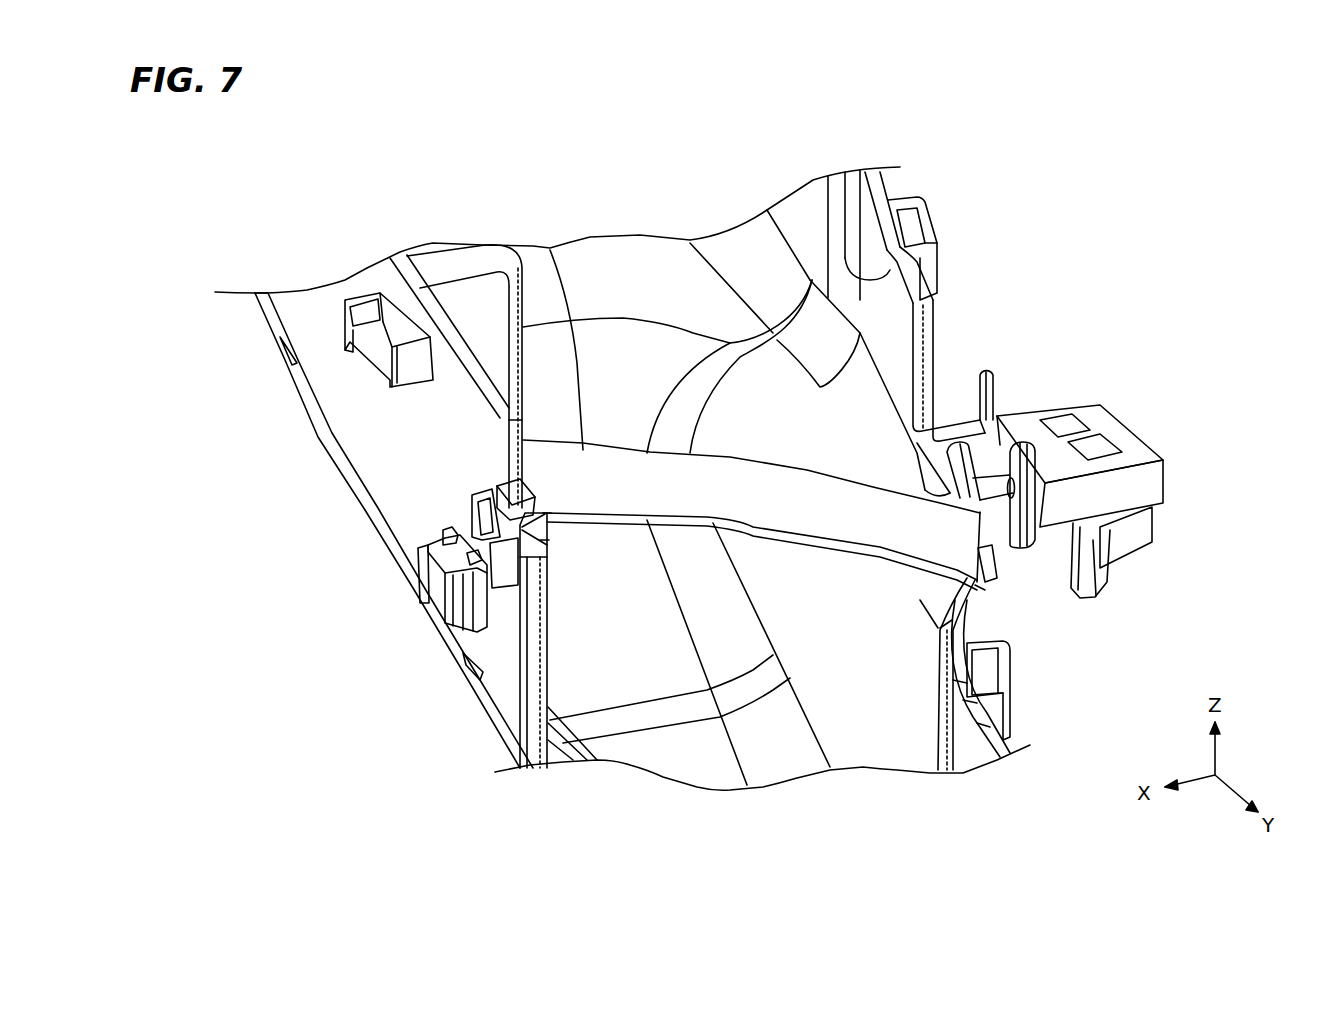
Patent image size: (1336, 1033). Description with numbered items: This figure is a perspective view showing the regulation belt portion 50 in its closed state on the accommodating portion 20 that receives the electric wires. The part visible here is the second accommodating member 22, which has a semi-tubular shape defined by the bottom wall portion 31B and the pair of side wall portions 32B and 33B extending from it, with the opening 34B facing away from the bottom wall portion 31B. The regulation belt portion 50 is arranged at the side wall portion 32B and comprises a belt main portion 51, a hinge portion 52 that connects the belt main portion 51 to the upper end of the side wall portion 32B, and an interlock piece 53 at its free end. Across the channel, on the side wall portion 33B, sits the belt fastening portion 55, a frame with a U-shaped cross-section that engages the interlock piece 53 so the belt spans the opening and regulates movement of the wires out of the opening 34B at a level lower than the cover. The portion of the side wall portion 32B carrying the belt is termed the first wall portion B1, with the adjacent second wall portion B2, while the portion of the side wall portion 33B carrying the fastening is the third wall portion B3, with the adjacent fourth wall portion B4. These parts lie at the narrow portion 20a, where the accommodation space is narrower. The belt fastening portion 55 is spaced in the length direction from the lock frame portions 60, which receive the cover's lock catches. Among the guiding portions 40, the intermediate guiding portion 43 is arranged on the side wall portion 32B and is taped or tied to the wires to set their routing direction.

The accommodating portion 20 is at (1095, 301).
The narrow portion 20a is at (543, 522).
The second accommodating member 22 is at (933, 333).
The bottom wall portion 31B is at (680, 750).
The side wall portion 32B is at (923, 282).
The side wall portion 33B is at (395, 293).
The opening 34B is at (846, 176).
The guiding portions 40 is at (1093, 498).
The intermediate guiding portion 43 is at (1108, 418).
The regulation belt portion 50 is at (693, 503).
The belt main portion 51 is at (728, 478).
The hinge portion 52 is at (993, 567).
The interlock piece 53 is at (507, 498).
The belt fastening portion 55 is at (472, 515).
The lock frame portion 60 is at (346, 305).
The first wall portion B1 is at (983, 593).
The second wall portion B2 is at (1008, 430).
The third wall portion B3 is at (546, 512).
The fourth wall portion B4 is at (512, 420).